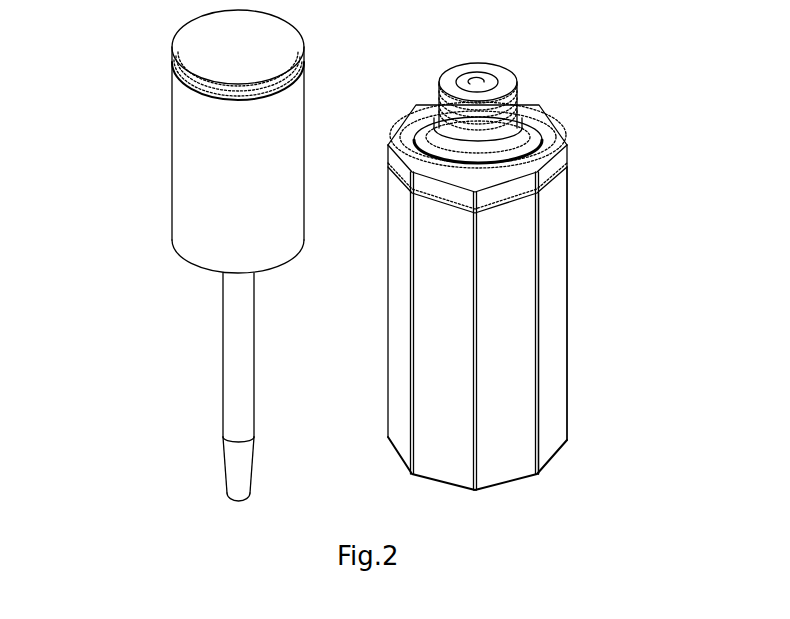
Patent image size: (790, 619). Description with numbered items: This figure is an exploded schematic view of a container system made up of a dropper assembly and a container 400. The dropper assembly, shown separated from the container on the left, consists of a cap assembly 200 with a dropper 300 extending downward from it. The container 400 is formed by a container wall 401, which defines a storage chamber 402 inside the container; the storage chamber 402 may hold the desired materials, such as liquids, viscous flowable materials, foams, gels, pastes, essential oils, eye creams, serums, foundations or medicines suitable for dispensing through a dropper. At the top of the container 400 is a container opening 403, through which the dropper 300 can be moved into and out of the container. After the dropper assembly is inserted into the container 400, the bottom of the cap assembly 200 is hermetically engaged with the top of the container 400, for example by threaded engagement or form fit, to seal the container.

The cap assembly 200 is at (168, 128).
The dropper 300 is at (215, 365).
The container 400 is at (535, 268).
The container wall 401 is at (550, 343).
The storage chamber 402 is at (505, 358).
The container opening 403 is at (475, 84).